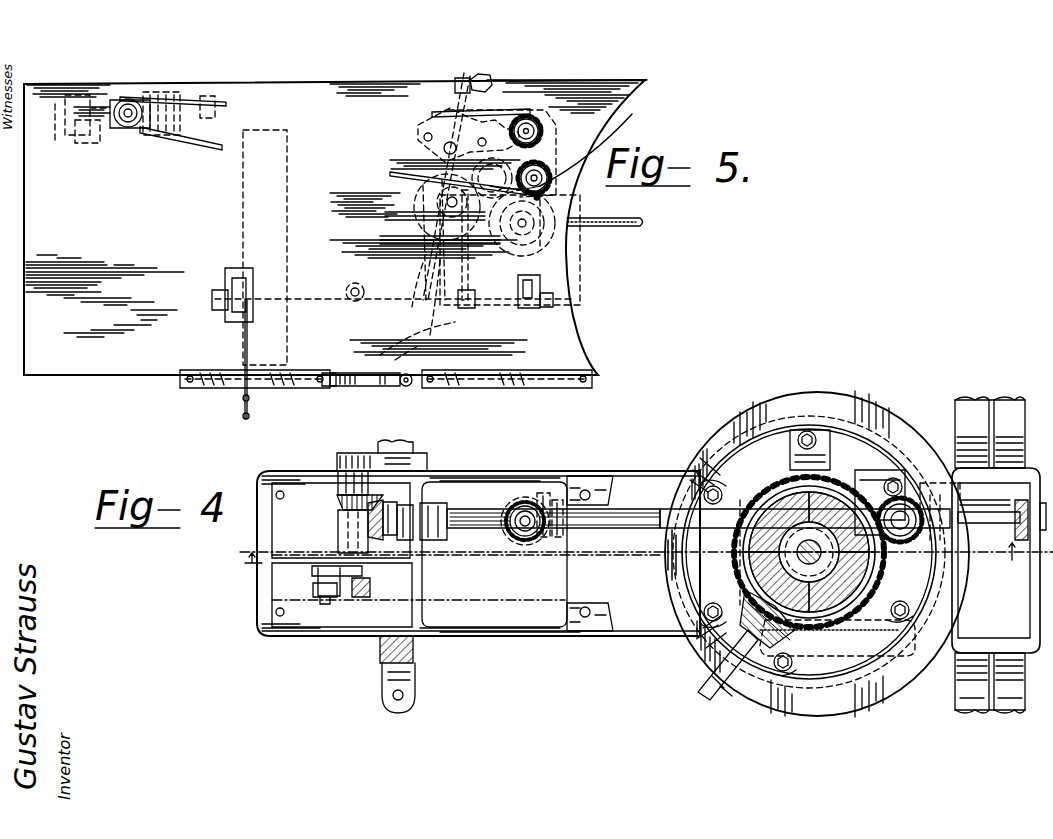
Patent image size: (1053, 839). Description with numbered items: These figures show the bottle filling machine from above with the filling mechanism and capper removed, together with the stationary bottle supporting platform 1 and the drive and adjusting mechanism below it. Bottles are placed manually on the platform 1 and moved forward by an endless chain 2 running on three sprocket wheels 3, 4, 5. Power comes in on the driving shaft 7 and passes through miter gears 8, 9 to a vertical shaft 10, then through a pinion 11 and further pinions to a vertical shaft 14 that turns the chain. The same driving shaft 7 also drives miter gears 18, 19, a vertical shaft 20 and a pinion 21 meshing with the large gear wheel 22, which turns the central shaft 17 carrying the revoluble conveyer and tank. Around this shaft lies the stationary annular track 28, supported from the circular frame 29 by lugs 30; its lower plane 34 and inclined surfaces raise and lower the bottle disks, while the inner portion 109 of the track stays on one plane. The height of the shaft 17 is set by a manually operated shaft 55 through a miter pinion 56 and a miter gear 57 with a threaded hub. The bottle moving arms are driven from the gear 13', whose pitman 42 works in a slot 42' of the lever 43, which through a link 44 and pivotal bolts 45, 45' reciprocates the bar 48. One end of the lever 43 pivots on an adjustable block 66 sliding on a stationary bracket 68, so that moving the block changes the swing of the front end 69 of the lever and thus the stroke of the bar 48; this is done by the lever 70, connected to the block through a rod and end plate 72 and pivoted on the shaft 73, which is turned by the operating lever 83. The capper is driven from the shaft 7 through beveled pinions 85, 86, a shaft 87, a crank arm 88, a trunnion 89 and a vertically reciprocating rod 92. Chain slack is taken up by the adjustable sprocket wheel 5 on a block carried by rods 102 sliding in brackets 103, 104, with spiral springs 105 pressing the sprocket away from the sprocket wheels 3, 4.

In FIG. 5, the stationary platform 1 is at (148, 362).
In FIG. 5, the endless chain 2 is at (200, 145).
In FIG. 5, the sprocket wheel 3 is at (545, 128).
In FIG. 5, the sprocket wheel 4 is at (552, 165).
In FIG. 5, the sprocket wheel 5 is at (118, 128).
In FIG. 5, the driving shaft 7 is at (606, 232).
In FIG. 4, the driving shaft 7 is at (485, 498).
In FIG. 5, the miter gear 8 is at (578, 200).
In FIG. 4, the miter gear 8 is at (552, 545).
In FIG. 5, the miter gear 9 is at (495, 262).
In FIG. 4, the miter gear 9 is at (522, 548).
In FIG. 5, the vertical shaft 10 is at (565, 262).
In FIG. 4, the vertical shaft 10 is at (520, 530).
In FIG. 5, the pinion 11 is at (500, 300).
In FIG. 5, the gear 13' is at (416, 237).
In FIG. 5, the vertical shaft 14 is at (573, 149).
In FIG. 4, the shaft 17 is at (860, 560).
In FIG. 4, the miter gear 18 is at (879, 500).
In FIG. 4, the miter gear 19 is at (978, 585).
In FIG. 4, the vertical shaft 20 is at (920, 518).
In FIG. 4, the pinion 21 is at (905, 490).
In FIG. 4, the gear wheel 22 is at (738, 552).
In FIG. 4, the annular track 28 is at (915, 680).
In FIG. 4, the circular frame 29 is at (838, 690).
In FIG. 4, the lug 30 is at (825, 450).
In FIG. 4, the lower plane 34 is at (700, 488).
In FIG. 5, the pitman 42 is at (403, 285).
In FIG. 5, the slot 42' is at (405, 298).
In FIG. 5, the lever 43 is at (451, 325).
In FIG. 5, the link 44 is at (378, 390).
In FIG. 5, the pivotal bolt 45 is at (324, 398).
In FIG. 5, the pivotal bolt 45' is at (421, 398).
In FIG. 5, the reciprocating bar 48 is at (290, 392).
In FIG. 4, the manually operated shaft 55 is at (710, 708).
In FIG. 4, the miter pinion 56 is at (800, 645).
In FIG. 4, the miter gear 57 is at (755, 585).
In FIG. 5, the adjustable block 66 is at (430, 113).
In FIG. 5, the stationary bracket 68 is at (420, 140).
In FIG. 5, the front end of lever 69 is at (388, 350).
In FIG. 5, the lever 70 is at (478, 253).
In FIG. 5, the end plate 72 is at (480, 76).
In FIG. 5, the shaft 73 is at (312, 305).
In FIG. 5, the operating lever 83 is at (240, 412).
In FIG. 4, the beveled pinion 85 is at (388, 540).
In FIG. 4, the beveled pinion 86 is at (345, 500).
In FIG. 4, the shaft 87 is at (350, 535).
In FIG. 4, the crank arm 88 is at (308, 572).
In FIG. 4, the trunnion 89 is at (325, 604).
In FIG. 4, the vertically reciprocating rod 92 is at (372, 588).
In FIG. 5, the supporting rod 102 is at (75, 137).
In FIG. 5, the bracket 103 is at (80, 135).
In FIG. 5, the bracket 104 is at (230, 100).
In FIG. 5, the spiral spring 105 is at (150, 136).
In FIG. 4, the inner portion of track 109 is at (668, 570).